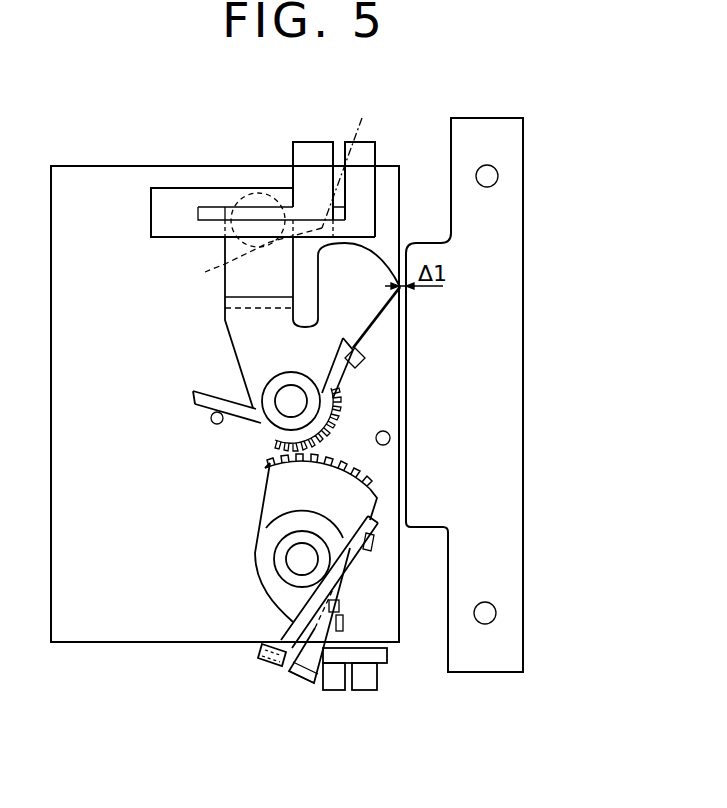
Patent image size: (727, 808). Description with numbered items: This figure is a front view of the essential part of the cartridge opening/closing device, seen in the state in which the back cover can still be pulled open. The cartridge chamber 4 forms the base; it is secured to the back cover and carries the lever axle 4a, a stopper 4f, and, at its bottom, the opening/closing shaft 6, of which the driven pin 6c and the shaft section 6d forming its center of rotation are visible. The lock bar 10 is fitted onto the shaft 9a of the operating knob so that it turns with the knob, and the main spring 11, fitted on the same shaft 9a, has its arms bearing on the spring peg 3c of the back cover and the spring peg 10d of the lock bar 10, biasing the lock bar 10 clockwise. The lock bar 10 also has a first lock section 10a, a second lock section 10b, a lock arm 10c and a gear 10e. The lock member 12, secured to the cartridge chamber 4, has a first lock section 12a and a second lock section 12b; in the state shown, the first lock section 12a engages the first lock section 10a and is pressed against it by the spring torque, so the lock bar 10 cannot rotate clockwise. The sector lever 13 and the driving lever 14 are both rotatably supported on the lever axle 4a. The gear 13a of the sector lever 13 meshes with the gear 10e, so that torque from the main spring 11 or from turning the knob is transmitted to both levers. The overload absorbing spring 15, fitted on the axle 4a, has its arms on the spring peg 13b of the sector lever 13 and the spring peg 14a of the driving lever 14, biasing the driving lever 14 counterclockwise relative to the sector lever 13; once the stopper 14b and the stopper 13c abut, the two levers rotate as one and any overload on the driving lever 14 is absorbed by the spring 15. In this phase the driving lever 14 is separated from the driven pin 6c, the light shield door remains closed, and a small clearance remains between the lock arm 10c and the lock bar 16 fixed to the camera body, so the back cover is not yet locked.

The cartridge chamber 4 is at (107, 170).
The lever axle 4a is at (293, 560).
The stopper 4f is at (390, 437).
The spring peg 3c is at (212, 424).
The opening/closing shaft 6 is at (390, 655).
The driven pin 6c is at (332, 692).
The shaft section 6d is at (368, 692).
The shaft 9a is at (287, 387).
The lock bar 10 is at (232, 320).
The first lock section 10a is at (237, 257).
The second lock section 10b is at (253, 214).
The lock arm 10c is at (365, 268).
The spring peg 10d is at (367, 358).
The gear 10e is at (340, 404).
The main spring 11 is at (192, 394).
The lock member 12 is at (172, 196).
The first lock section 12a is at (351, 161).
The second lock section 12b is at (303, 197).
The sector lever 13 is at (377, 496).
The gear 13a is at (373, 476).
The spring peg 13b is at (374, 541).
The stopper 13c is at (343, 622).
The driving lever 14 is at (266, 577).
The spring peg 14a is at (276, 664).
The stopper 14b is at (306, 678).
The overload absorbing spring 15 is at (288, 542).
The lock bar 16 is at (517, 142).